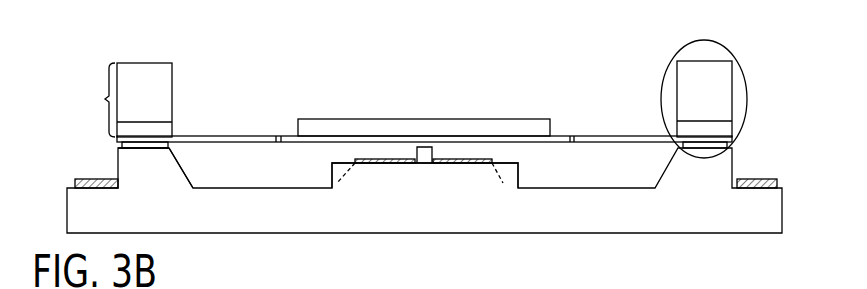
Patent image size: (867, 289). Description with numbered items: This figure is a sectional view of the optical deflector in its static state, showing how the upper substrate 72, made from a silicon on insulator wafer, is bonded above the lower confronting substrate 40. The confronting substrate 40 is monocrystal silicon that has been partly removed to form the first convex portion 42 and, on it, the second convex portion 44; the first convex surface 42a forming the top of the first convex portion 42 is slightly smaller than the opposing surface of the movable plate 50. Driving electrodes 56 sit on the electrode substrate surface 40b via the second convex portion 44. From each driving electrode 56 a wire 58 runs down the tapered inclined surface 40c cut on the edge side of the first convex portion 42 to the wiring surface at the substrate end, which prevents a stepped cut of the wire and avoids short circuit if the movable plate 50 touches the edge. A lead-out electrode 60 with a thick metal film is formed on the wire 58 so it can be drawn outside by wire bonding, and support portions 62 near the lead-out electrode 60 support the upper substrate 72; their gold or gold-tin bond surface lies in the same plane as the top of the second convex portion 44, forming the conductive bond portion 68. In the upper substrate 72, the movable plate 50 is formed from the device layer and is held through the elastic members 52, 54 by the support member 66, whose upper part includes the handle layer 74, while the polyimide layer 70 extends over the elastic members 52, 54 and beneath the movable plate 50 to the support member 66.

The confronting substrate 40 is at (72, 215).
The electrode substrate surface 40b is at (390, 161).
The tapered inclined surface 40c is at (497, 173).
The first convex portion 42 is at (350, 185).
The first convex surface 42a is at (342, 162).
The second convex portion 44 is at (425, 164).
The movable plate 50 is at (473, 128).
The elastic member 52 is at (207, 145).
The elastic member 54 is at (610, 135).
The driving electrode 56 is at (444, 165).
The wire 58 is at (612, 192).
The lead-out electrode 60 is at (762, 177).
The support portion 62 is at (170, 167).
The support member 66 is at (675, 58).
The conductive bond portion 68 is at (710, 140).
The polyimide layer 70 is at (162, 138).
The upper substrate 72 is at (96, 100).
The handle layer 74 is at (138, 77).